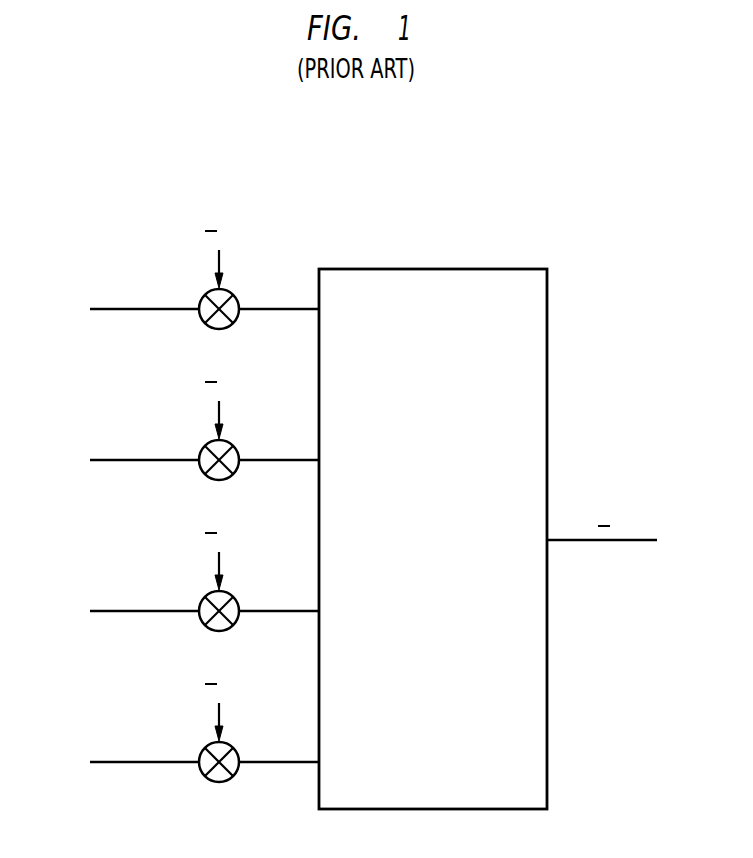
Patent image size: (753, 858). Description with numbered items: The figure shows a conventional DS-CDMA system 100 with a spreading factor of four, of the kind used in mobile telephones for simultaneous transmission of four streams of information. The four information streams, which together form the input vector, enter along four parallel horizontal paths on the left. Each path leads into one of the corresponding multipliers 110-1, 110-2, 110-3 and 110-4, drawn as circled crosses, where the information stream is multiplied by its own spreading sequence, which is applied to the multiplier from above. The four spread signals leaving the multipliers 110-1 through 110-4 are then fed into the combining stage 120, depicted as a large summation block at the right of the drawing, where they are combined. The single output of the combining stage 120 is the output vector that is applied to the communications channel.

The DS-CDMA system 100 is at (685, 211).
The multiplier 110-1 is at (205, 296).
The multiplier 110-2 is at (205, 447).
The multiplier 110-3 is at (205, 598).
The multiplier 110-4 is at (205, 749).
The combining stage 120 is at (455, 672).